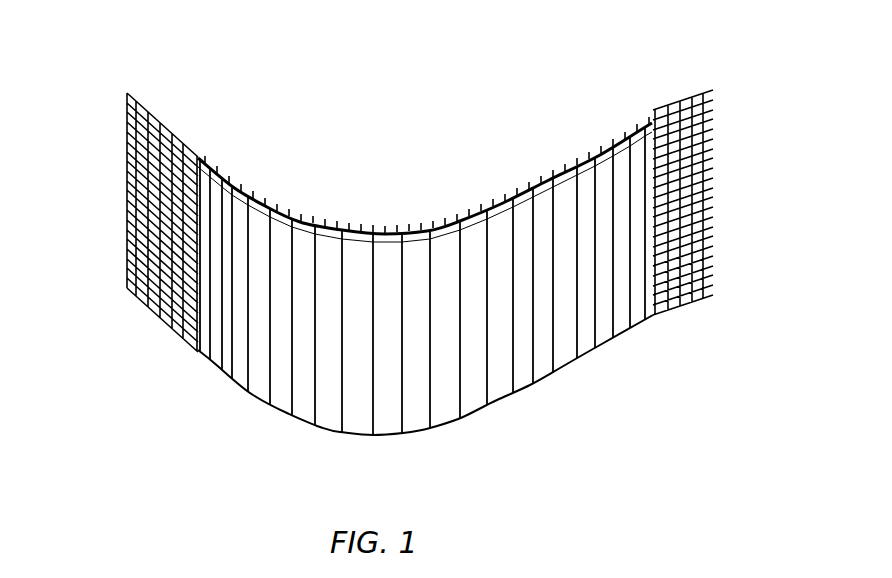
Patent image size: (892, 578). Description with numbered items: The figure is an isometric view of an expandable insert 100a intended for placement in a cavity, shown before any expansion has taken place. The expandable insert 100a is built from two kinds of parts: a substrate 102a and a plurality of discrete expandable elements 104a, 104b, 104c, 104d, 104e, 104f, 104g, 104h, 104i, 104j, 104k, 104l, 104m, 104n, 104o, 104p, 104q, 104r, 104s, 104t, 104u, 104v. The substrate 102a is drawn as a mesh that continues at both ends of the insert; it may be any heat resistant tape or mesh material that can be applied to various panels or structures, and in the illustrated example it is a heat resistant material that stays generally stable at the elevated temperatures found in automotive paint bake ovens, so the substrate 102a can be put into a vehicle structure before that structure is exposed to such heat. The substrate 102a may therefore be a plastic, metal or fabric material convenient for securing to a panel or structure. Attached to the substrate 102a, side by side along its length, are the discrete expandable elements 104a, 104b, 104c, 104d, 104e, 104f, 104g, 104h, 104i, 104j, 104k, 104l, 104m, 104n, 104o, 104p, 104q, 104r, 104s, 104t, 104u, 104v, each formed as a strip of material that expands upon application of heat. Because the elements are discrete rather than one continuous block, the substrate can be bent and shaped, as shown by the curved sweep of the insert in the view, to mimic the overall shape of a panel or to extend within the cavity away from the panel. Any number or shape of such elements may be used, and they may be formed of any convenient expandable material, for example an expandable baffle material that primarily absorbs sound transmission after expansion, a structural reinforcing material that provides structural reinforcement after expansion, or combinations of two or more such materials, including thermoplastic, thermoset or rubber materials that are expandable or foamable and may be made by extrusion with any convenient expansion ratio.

The expandable insert 100a is at (122, 52).
The substrate 102a is at (142, 318).
The discrete expandable element 104a is at (198, 352).
The discrete expandable element 104b is at (212, 362).
The discrete expandable element 104c is at (227, 368).
The discrete expandable element 104d is at (243, 378).
The discrete expandable element 104e is at (260, 392).
The discrete expandable element 104f is at (280, 402).
The discrete expandable element 104g is at (305, 247).
The discrete expandable element 104h is at (325, 255).
The discrete expandable element 104i is at (362, 417).
The discrete expandable element 104j is at (385, 408).
The discrete expandable element 104k is at (417, 402).
The discrete expandable element 104l is at (443, 410).
The discrete expandable element 104m is at (470, 405).
The discrete expandable element 104n is at (502, 388).
The discrete expandable element 104o is at (537, 375).
The discrete expandable element 104p is at (542, 358).
The discrete expandable element 104q is at (565, 350).
The discrete expandable element 104r is at (585, 333).
The discrete expandable element 104s is at (602, 307).
The discrete expandable element 104t is at (622, 287).
The discrete expandable element 104u is at (637, 152).
The discrete expandable element 104v is at (650, 172).